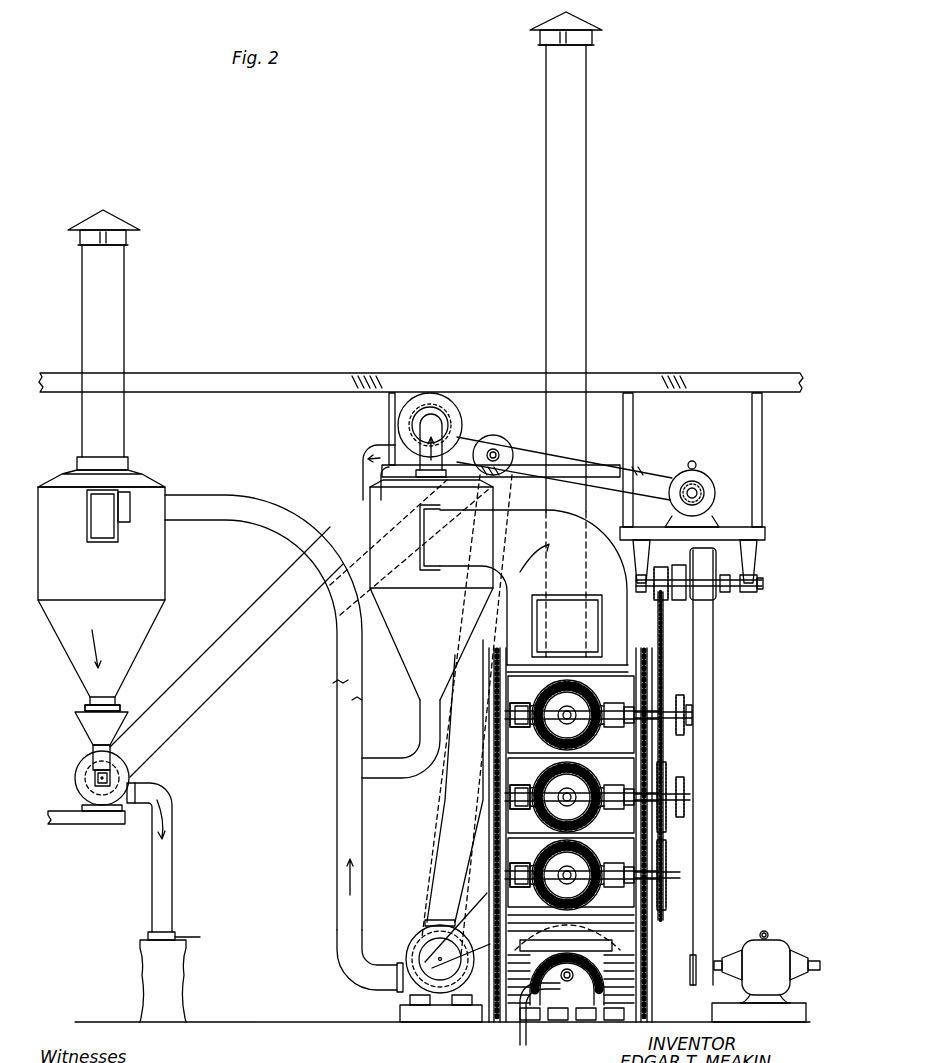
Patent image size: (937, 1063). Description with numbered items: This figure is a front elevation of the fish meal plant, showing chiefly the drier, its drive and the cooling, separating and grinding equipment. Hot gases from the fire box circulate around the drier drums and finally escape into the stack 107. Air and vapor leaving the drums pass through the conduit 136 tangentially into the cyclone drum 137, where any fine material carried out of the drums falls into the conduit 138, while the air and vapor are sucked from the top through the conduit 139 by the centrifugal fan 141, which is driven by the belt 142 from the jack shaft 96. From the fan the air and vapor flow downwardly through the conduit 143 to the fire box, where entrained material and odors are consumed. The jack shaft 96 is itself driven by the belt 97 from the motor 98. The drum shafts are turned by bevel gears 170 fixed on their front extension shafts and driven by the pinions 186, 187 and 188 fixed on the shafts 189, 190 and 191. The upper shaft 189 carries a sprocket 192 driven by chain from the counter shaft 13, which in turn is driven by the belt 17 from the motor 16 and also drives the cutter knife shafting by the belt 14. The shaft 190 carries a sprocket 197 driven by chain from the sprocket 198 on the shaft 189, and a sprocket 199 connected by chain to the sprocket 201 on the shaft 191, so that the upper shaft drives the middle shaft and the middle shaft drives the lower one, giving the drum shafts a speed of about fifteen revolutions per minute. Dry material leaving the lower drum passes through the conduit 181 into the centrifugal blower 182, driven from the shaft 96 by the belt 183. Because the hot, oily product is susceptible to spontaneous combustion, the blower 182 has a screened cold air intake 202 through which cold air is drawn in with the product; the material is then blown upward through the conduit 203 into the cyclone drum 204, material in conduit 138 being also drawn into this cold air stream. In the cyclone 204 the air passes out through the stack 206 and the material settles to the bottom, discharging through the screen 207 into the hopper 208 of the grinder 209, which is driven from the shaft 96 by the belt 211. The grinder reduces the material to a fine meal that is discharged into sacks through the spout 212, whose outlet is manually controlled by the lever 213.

The counter shaft 13 is at (722, 590).
The belt 14 is at (666, 573).
The motor 16 is at (764, 945).
The belt 17 is at (707, 687).
The jack shaft 96 is at (496, 455).
The belt 97 is at (640, 470).
The motor 98 is at (698, 483).
The stack 107 is at (584, 247).
The conduit 136 is at (584, 581).
The cyclone drum 137 is at (436, 609).
The conduit 138 is at (401, 739).
The conduit 139 is at (428, 422).
The centrifugal fan 141 is at (430, 412).
The belt 142 is at (470, 457).
The conduit 143 is at (365, 478).
The bevel gears 170 is at (596, 692).
The conduit 181 is at (475, 914).
The centrifugal blower 182 is at (440, 993).
The belt 183 is at (443, 838).
The pinion 186 is at (590, 730).
The pinion 187 is at (590, 810).
The pinion 188 is at (605, 888).
The upper shaft 189 is at (545, 700).
The shaft 190 is at (545, 780).
The lower shaft 191 is at (545, 860).
The sprocket 192 is at (672, 690).
The sprocket 197 is at (686, 772).
The sprocket 198 is at (686, 738).
The sprocket 199 is at (666, 830).
The sprocket 201 is at (668, 858).
The screened cold air intake 202 is at (430, 926).
The conduit 203 is at (338, 815).
The cyclone drum 204 is at (122, 584).
The stack 206 is at (118, 314).
The screen 207 is at (114, 710).
The hopper 208 is at (96, 726).
The grinder 209 is at (78, 782).
The belt 211 is at (230, 690).
The spout 212 is at (167, 862).
The lever 213 is at (186, 936).